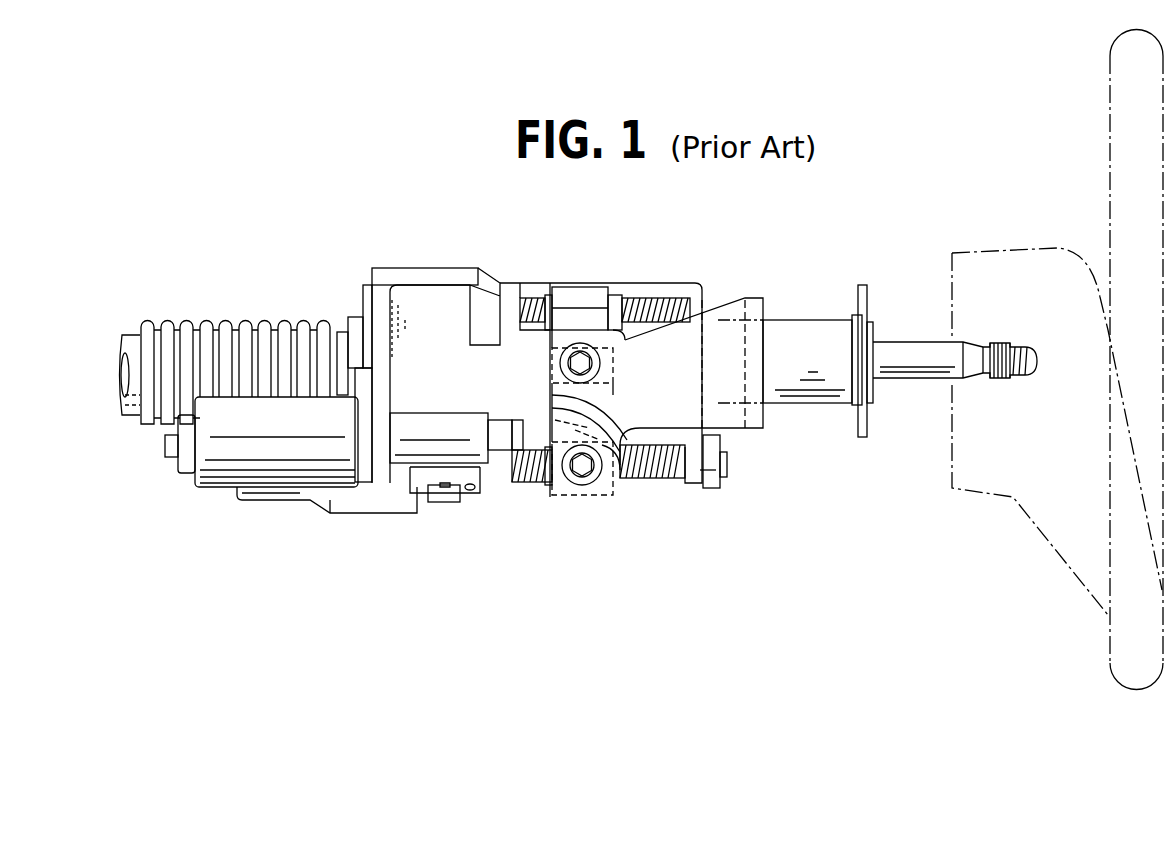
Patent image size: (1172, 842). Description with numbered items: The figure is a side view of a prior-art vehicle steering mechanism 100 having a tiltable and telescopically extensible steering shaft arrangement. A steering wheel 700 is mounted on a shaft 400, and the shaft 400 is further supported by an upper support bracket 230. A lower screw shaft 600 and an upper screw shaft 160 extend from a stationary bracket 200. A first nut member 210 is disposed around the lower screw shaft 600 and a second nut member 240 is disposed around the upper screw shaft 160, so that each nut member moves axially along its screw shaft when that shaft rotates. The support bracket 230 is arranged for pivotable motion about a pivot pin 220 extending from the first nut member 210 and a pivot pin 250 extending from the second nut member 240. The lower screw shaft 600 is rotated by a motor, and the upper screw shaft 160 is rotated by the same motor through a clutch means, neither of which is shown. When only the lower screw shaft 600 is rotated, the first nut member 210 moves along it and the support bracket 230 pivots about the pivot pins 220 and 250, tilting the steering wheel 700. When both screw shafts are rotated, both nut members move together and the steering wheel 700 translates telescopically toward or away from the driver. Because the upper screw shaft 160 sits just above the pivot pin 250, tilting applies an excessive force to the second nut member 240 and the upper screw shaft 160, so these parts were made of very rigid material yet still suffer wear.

The steering mechanism 100 is at (713, 268).
The upper screw shaft 160 is at (645, 292).
The stationary bracket 200 is at (409, 268).
The first nut member 210 is at (551, 495).
The pivot pin 220 is at (585, 470).
The support bracket 230 is at (763, 428).
The second nut member 240 is at (569, 287).
The pivot pin 250 is at (588, 363).
The shaft 400 is at (912, 345).
The lower screw shaft 600 is at (657, 480).
The steering wheel 700 is at (1112, 120).